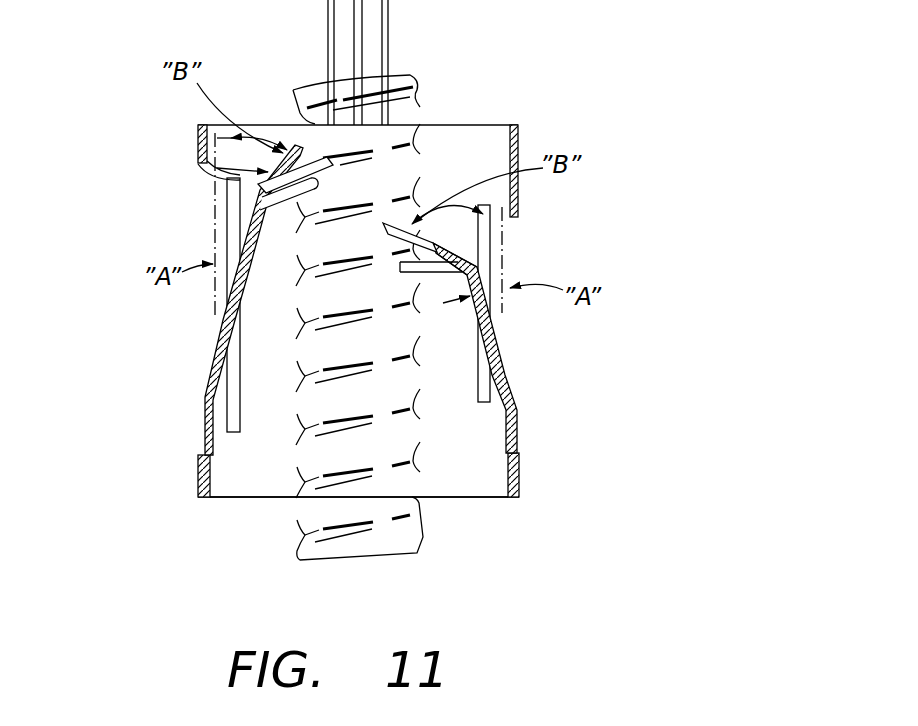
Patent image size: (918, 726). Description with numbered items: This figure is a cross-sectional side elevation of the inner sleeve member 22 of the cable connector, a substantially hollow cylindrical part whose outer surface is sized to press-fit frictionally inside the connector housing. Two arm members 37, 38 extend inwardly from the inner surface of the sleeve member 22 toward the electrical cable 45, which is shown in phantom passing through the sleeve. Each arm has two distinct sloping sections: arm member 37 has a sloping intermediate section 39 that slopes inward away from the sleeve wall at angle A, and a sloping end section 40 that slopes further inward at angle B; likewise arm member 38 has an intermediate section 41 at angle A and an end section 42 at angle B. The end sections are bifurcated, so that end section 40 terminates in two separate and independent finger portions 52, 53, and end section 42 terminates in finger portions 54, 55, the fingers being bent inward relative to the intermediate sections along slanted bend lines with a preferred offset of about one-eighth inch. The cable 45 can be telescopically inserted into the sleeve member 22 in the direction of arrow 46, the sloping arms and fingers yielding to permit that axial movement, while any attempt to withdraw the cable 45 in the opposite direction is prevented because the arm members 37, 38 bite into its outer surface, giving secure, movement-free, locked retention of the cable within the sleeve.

The inner sleeve member 22 is at (182, 118).
The arm member 37 is at (205, 376).
The arm member 38 is at (489, 277).
The intermediate section 39 is at (220, 337).
The end section 40 is at (197, 162).
The intermediate section 41 is at (500, 345).
The end section 42 is at (452, 243).
The electrical cable 45 is at (423, 542).
The arrow 46 is at (255, 501).
The finger portion 52 is at (397, 230).
The finger portion 53 is at (403, 274).
The finger portion 54 is at (296, 142).
The finger portion 55 is at (257, 217).